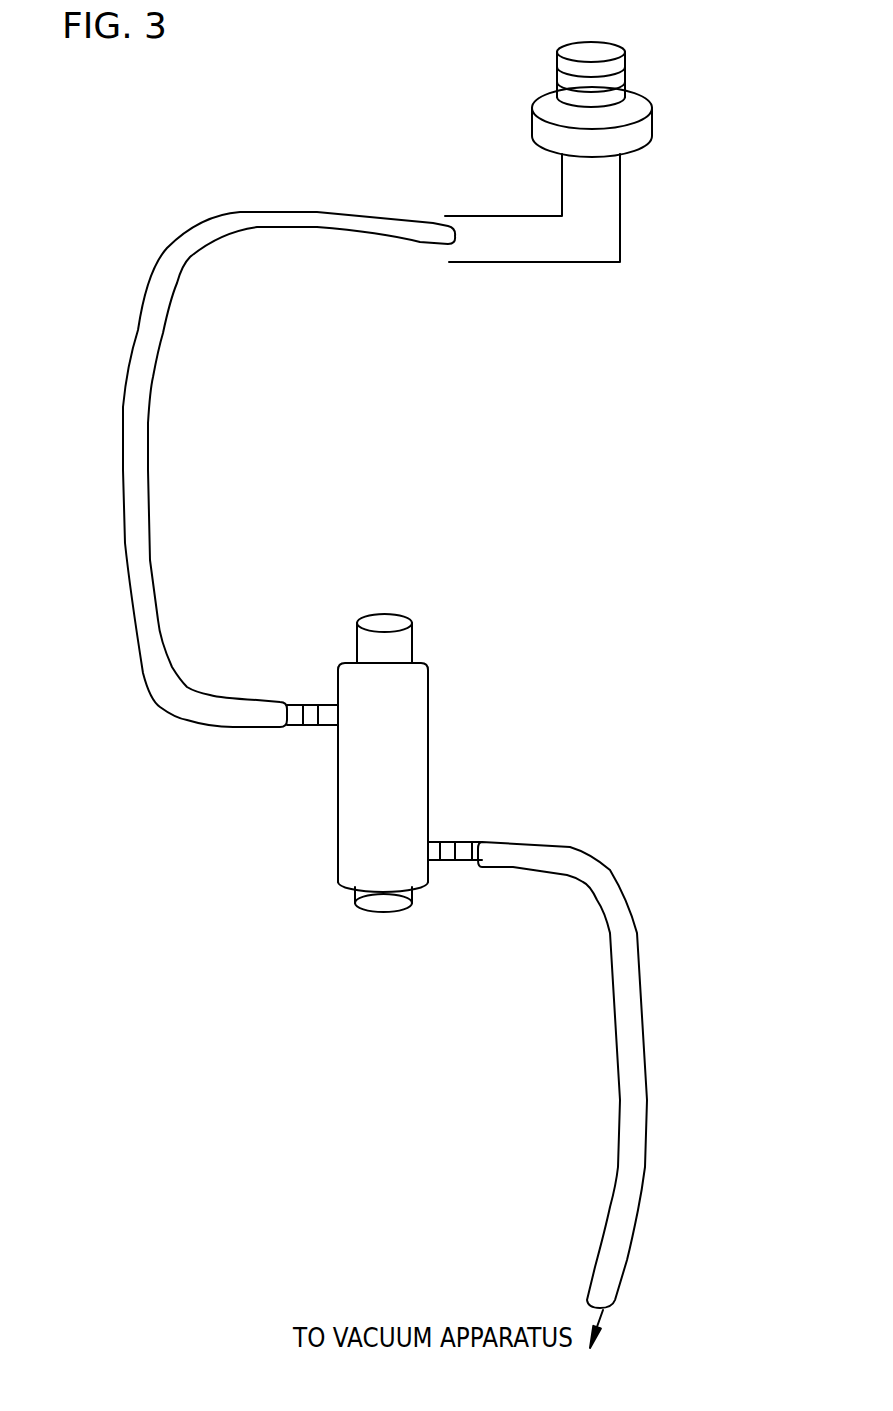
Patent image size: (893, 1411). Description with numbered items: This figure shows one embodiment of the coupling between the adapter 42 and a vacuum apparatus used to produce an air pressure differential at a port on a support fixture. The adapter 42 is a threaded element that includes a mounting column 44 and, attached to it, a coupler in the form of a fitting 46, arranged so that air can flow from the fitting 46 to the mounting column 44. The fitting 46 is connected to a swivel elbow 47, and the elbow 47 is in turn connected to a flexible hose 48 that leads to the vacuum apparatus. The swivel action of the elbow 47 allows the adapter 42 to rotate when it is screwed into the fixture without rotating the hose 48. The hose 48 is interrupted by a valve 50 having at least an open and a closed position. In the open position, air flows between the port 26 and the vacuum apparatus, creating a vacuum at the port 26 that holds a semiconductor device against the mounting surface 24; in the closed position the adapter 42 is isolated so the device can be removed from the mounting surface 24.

The mounting surface 24 is at (613, 53).
The port 26 is at (580, 51).
The adapter 42 is at (590, 78).
The mounting column 44 is at (625, 80).
The fitting 46 is at (652, 125).
The swivel elbow 47 is at (622, 200).
The flexible hose 48 is at (153, 566).
The valve 50 is at (338, 785).